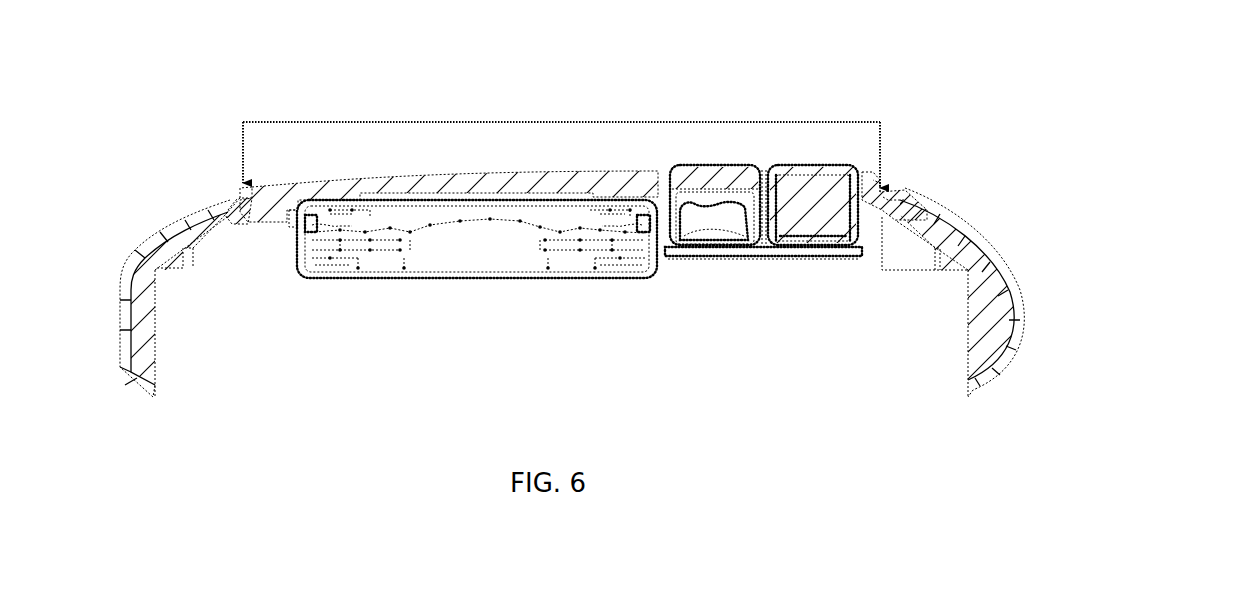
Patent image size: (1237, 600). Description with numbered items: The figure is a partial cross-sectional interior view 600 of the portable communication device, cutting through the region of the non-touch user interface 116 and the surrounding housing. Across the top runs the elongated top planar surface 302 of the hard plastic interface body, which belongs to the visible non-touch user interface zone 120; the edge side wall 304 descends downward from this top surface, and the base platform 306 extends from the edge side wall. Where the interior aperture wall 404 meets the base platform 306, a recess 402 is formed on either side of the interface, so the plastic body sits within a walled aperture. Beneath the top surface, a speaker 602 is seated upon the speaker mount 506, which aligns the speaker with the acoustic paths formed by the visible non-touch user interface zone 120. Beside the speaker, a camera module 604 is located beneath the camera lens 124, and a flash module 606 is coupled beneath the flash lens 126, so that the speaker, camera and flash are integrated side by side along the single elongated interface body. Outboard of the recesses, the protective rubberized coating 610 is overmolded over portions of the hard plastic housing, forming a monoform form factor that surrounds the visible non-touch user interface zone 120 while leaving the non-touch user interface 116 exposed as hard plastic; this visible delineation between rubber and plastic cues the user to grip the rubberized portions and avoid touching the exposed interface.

The partial cross-sectional interior view 600 is at (960, 68).
The non-touch user interface 116 is at (460, 136).
The visible non-touch user interface zone 120 is at (572, 122).
The camera lens 124 is at (715, 167).
The flash lens 126 is at (812, 167).
The elongated top planar surface 302 is at (456, 190).
The edge side wall 304 is at (257, 197).
The base platform 306 is at (240, 222).
The recess 402 is at (243, 192).
The interior aperture wall 404 is at (230, 198).
The speaker mount 506 is at (323, 205).
The speaker 602 is at (485, 284).
The camera module 604 is at (713, 256).
The flash module 606 is at (812, 256).
The protective rubberized coating 610 is at (120, 357).